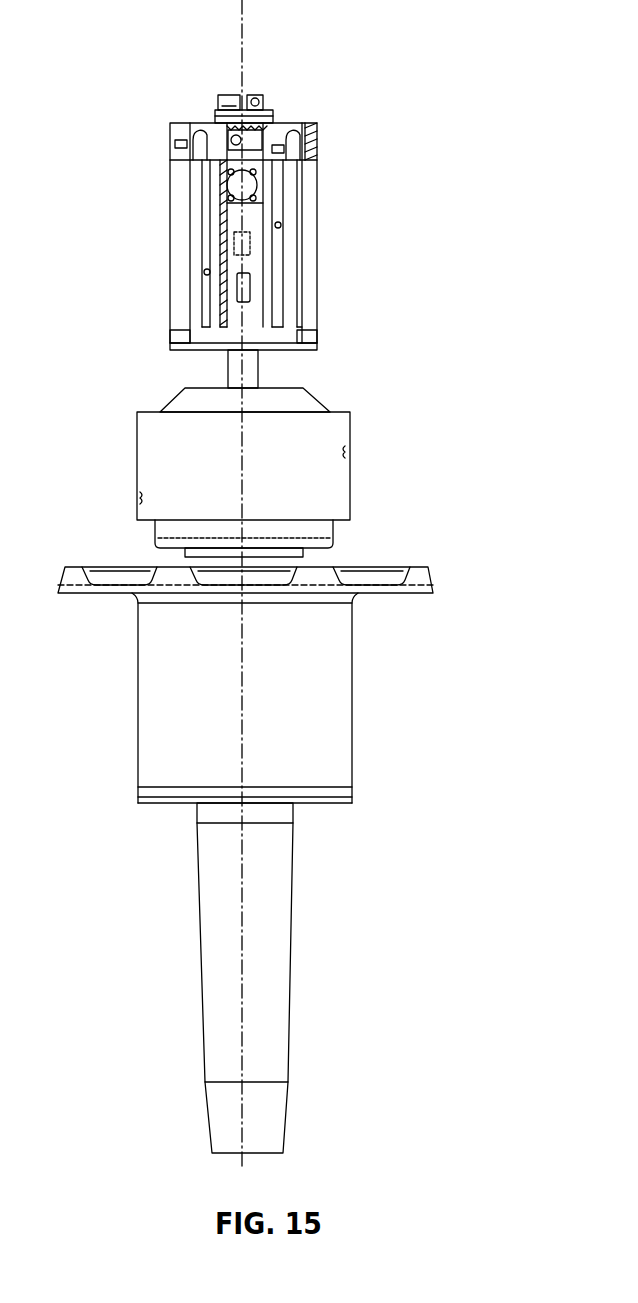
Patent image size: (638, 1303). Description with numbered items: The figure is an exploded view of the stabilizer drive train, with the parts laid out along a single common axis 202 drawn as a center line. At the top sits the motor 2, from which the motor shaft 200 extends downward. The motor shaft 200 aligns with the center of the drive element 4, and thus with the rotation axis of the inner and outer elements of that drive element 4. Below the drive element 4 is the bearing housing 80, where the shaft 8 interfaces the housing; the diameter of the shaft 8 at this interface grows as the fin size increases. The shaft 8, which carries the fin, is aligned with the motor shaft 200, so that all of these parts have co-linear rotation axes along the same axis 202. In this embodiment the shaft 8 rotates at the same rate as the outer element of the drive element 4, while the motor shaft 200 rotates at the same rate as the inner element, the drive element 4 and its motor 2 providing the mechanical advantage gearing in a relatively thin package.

The central axis 202 is at (240, 62).
The motor 2 is at (170, 232).
The motor shaft 200 is at (228, 380).
The drive element 4 is at (137, 466).
The bearing housing 80 is at (138, 722).
The shaft 8 is at (200, 945).